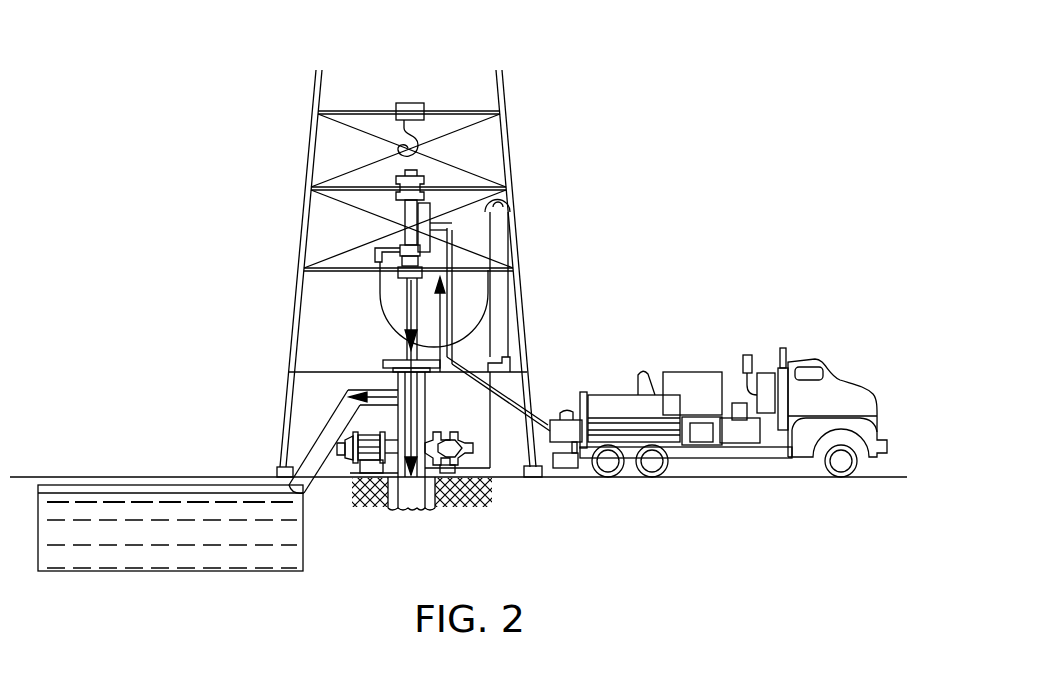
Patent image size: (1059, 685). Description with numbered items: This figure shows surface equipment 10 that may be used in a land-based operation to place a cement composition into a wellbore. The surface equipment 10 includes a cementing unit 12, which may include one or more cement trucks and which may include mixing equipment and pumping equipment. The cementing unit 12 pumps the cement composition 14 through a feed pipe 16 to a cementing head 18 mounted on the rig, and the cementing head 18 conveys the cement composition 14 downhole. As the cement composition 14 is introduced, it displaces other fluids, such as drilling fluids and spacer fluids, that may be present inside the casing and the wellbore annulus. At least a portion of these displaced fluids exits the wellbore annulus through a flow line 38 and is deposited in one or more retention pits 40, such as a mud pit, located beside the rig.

The surface equipment 10 is at (735, 82).
The cementing unit 12 is at (748, 464).
The cement composition 14 is at (408, 303).
The feed pipe 16 is at (528, 384).
The cementing head 18 is at (440, 177).
The flow line 38 is at (325, 462).
The retention pit 40 is at (118, 572).